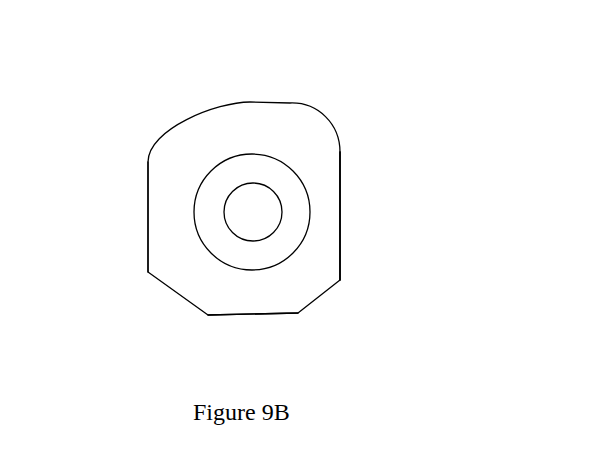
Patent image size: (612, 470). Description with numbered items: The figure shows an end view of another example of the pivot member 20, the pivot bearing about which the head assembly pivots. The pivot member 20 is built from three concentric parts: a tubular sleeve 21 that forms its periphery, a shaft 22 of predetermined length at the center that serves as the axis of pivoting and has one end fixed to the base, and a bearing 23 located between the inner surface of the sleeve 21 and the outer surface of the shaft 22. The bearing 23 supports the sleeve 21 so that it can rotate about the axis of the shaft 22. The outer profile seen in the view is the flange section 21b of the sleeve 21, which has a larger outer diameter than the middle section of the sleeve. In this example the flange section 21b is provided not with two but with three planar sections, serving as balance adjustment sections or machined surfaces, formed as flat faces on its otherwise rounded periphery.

The pivot member 20 is at (265, 53).
The sleeve 21 is at (264, 115).
The shaft 22 is at (253, 198).
The bearing 23 is at (295, 197).
The flange section 21b is at (340, 180).